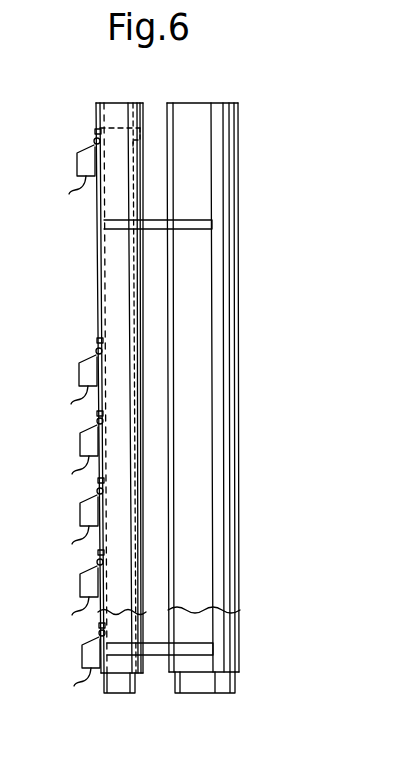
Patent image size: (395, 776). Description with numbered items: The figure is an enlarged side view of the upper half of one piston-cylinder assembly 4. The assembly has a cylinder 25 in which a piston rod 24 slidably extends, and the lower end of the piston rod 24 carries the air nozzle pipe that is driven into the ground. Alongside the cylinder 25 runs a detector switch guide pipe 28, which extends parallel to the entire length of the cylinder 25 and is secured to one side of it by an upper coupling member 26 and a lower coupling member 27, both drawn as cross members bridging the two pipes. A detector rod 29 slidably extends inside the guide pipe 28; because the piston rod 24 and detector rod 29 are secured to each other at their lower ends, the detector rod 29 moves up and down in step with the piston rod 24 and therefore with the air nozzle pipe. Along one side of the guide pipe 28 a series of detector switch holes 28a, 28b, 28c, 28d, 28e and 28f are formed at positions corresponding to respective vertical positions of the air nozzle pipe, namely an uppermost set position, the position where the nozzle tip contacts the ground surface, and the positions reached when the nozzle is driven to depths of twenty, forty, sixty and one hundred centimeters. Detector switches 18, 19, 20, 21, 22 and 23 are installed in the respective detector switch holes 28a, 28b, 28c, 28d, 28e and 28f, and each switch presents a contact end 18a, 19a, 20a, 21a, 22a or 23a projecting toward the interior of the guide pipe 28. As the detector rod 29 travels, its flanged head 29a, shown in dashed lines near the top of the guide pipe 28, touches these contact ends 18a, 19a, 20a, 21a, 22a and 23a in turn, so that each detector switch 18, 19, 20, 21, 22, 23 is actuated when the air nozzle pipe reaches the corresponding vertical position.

The piston-cylinder assembly 4 is at (268, 155).
The detector switch 18 is at (85, 162).
The contact end 18a is at (93, 141).
The detector switch 19 is at (83, 372).
The contact end 19a is at (96, 351).
The detector switch 20 is at (85, 450).
The contact end 20a is at (97, 421).
The detector switch 21 is at (85, 518).
The contact end 21a is at (97, 491).
The detector switch 22 is at (85, 590).
The contact end 22a is at (97, 562).
The detector switch 23 is at (87, 665).
The contact end 23a is at (99, 633).
The piston rod 24 is at (207, 685).
The cylinder 25 is at (205, 335).
The coupling member 26 is at (155, 222).
The coupling member 27 is at (158, 650).
The detector switch guide pipe 28 is at (120, 268).
The detector switch hole 28a is at (97, 132).
The detector switch hole 28b is at (97, 340).
The detector switch hole 28c is at (97, 413).
The detector switch hole 28d is at (100, 480).
The detector switch hole 28e is at (100, 552).
The detector switch hole 28f is at (100, 625).
The detector rod 29 is at (120, 682).
The flanged head 29a is at (145, 133).